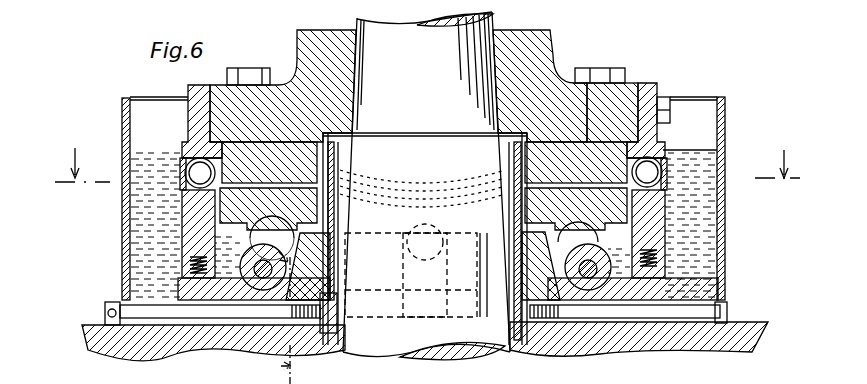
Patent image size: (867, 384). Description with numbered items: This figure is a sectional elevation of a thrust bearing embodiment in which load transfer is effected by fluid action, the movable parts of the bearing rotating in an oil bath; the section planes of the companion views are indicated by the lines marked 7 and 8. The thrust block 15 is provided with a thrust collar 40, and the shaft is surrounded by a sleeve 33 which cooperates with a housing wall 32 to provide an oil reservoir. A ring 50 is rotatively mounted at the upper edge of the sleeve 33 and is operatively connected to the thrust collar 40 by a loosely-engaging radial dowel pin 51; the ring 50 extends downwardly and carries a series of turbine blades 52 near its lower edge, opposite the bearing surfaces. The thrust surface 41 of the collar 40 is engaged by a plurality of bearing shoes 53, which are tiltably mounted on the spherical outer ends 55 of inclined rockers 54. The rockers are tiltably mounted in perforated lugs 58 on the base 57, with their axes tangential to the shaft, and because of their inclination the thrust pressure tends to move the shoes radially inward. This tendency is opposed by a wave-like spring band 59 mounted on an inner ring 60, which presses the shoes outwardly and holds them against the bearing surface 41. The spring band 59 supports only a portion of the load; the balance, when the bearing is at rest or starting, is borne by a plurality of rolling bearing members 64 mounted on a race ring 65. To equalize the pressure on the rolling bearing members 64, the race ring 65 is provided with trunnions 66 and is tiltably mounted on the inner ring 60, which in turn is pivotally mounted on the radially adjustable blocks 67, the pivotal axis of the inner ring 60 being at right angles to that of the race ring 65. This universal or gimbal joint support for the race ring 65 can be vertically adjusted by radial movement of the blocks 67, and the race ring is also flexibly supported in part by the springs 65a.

The thrust block 15 is at (545, 58).
The radial dowel pin 51 is at (530, 137).
The thrust collar 40 is at (670, 147).
The thrust surface 41 is at (695, 140).
The rolling bearing members 64 is at (700, 165).
The bearing shoes 53 is at (700, 207).
The race ring 65 is at (668, 240).
The springs 65a is at (673, 273).
The ring 50 is at (328, 149).
The turbine blades 52 is at (520, 175).
The sleeve 33 is at (535, 295).
The inner ring 60 is at (540, 240).
The inclined rockers 54 is at (540, 258).
The trunnions 66 is at (423, 261).
The spring band 59 is at (533, 212).
The spherical outer ends 55 is at (598, 246).
The perforated lugs 58 is at (602, 258).
The housing wall 32 is at (725, 290).
The radially adjustable blocks 67 is at (308, 322).
The base 57 is at (652, 340).
The section line 7- 7 is at (427, 162).
The section line 8- 8 is at (279, 310).